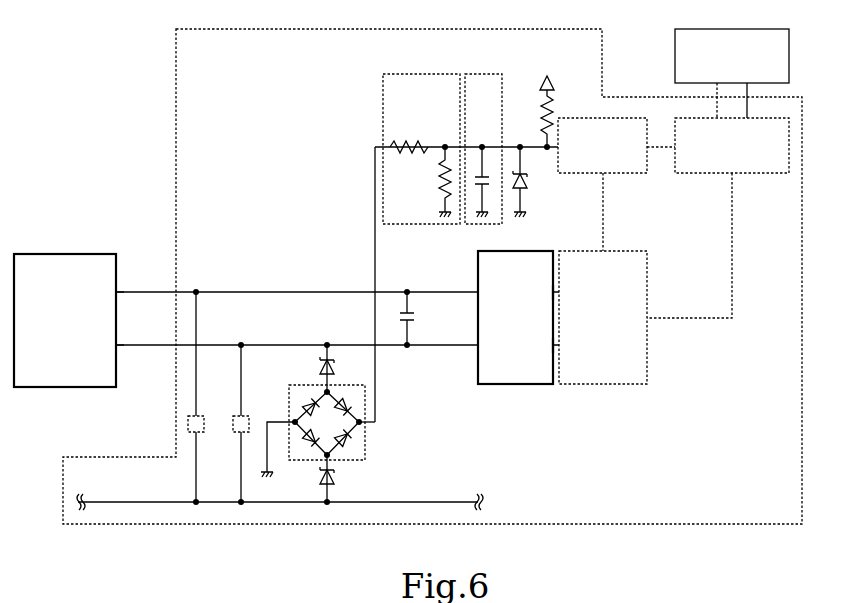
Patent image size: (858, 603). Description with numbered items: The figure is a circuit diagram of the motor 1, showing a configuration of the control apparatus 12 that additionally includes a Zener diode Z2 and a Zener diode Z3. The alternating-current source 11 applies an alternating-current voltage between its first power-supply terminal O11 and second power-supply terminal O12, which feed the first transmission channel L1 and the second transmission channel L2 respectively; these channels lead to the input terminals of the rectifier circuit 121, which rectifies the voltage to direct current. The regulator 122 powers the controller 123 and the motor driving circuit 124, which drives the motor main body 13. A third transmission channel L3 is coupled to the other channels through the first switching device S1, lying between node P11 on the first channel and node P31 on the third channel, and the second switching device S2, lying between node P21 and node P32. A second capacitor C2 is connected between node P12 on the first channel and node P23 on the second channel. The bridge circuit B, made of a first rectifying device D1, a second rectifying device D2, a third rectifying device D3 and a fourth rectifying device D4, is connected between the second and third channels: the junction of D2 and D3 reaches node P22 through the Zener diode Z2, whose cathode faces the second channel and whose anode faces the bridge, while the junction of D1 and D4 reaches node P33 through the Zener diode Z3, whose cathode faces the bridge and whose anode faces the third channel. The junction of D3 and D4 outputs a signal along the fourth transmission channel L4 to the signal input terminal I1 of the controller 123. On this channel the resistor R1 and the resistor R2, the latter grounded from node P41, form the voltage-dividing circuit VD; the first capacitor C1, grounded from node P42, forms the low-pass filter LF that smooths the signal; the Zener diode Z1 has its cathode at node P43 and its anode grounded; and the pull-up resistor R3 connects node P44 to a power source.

The motor 1 is at (83, 59).
The alternating-current source 11 is at (84, 254).
The control apparatus 12 is at (175, 46).
The motor main body 13 is at (675, 53).
The rectifier circuit 121 is at (505, 385).
The regulator 122 is at (605, 385).
The controller 123 is at (610, 117).
The motor driving circuit 124 is at (758, 117).
The first power-supply terminal O11 is at (120, 290).
The second power-supply terminal O12 is at (120, 343).
The first transmission channel L1 is at (238, 290).
The second transmission channel L2 is at (284, 343).
The third transmission channel L3 is at (109, 500).
The fourth transmission channel L4 is at (374, 207).
The node P11 is at (197, 287).
The node P12 is at (405, 287).
The node P21 is at (242, 341).
The node P22 is at (328, 341).
The node P23 is at (412, 351).
The node P31 is at (192, 499).
The node P32 is at (238, 498).
The node P33 is at (333, 506).
The node P41 is at (445, 143).
The node P42 is at (482, 143).
The node P43 is at (520, 143).
The node P44 is at (547, 153).
The first switching device S1 is at (200, 414).
The second switching device S2 is at (245, 414).
The first capacitor C1 is at (478, 194).
The second capacitor C2 is at (420, 317).
The resistor R1 is at (416, 140).
The resistor R2 is at (440, 196).
The resistor R3 is at (553, 112).
The Zener diode Z1 is at (523, 196).
The Zener diode Z2 is at (340, 367).
The Zener diode Z3 is at (346, 478).
The first rectifying device D1 is at (309, 443).
The second rectifying device D2 is at (307, 402).
The third rectifying device D3 is at (354, 404).
The fourth rectifying device D4 is at (354, 447).
The bridge circuit B is at (349, 426).
The voltage-dividing circuit VD is at (422, 73).
The low-pass filter LF is at (484, 73).
The signal input terminal I1 is at (563, 152).